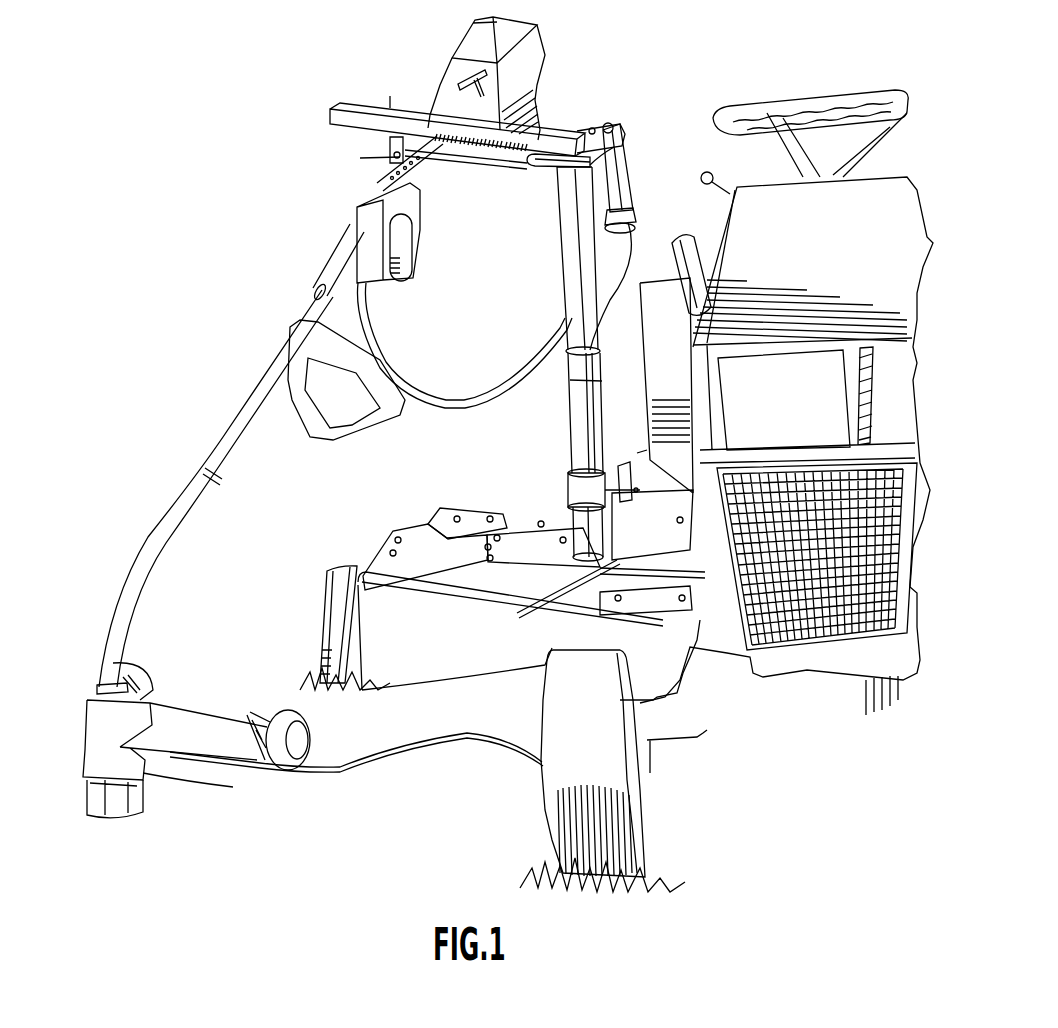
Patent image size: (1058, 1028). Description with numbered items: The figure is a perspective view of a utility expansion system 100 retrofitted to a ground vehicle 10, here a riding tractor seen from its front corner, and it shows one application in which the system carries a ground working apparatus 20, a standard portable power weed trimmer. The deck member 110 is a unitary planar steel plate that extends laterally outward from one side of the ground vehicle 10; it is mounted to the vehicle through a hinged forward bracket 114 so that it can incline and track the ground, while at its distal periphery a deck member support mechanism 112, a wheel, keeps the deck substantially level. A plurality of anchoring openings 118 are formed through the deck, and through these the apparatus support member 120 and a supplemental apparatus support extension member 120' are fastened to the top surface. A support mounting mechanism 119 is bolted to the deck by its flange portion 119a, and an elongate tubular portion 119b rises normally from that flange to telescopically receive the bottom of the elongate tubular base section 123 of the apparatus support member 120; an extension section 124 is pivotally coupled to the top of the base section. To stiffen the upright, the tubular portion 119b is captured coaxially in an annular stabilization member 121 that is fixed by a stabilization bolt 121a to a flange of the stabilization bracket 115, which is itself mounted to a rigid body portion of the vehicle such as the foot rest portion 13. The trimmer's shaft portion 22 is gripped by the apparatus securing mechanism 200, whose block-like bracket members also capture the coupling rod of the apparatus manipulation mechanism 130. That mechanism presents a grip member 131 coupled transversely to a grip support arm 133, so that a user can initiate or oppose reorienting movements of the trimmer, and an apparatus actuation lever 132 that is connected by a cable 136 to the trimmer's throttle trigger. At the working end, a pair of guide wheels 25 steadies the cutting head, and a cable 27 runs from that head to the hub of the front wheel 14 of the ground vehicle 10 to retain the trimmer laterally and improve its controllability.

The ground vehicle 10 is at (824, 240).
The foot rest portion 13 is at (667, 570).
The front wheel 14 is at (592, 787).
The ground working apparatus 20 is at (450, 85).
The shaft portion 22 is at (312, 300).
The guide wheels 25 is at (280, 718).
The cable 27 is at (333, 783).
The utility expansion system 100 is at (498, 576).
The deck member 110 is at (416, 530).
The deck member support mechanism 112 is at (333, 580).
The forward bracket 114 is at (612, 630).
The stabilization bracket 115 is at (546, 578).
The anchoring openings 118 is at (540, 524).
The support mounting mechanism 119 is at (580, 410).
The flange portion 119a is at (488, 550).
The tubular portion 119b is at (573, 380).
The apparatus support member 120 is at (548, 261).
The supplemental apparatus support extension member 120' is at (466, 491).
The annular stabilization member 121 is at (560, 480).
The stabilization bolt 121a is at (617, 477).
The elongate tubular base section 123 is at (597, 318).
The extension section 124 is at (534, 140).
The apparatus manipulation mechanism 130 is at (620, 150).
The grip member 131 is at (622, 145).
The apparatus actuation lever 132 is at (560, 199).
The grip support arm 133 is at (591, 131).
The cable 136 is at (425, 397).
The apparatus securing mechanism 200 is at (357, 205).